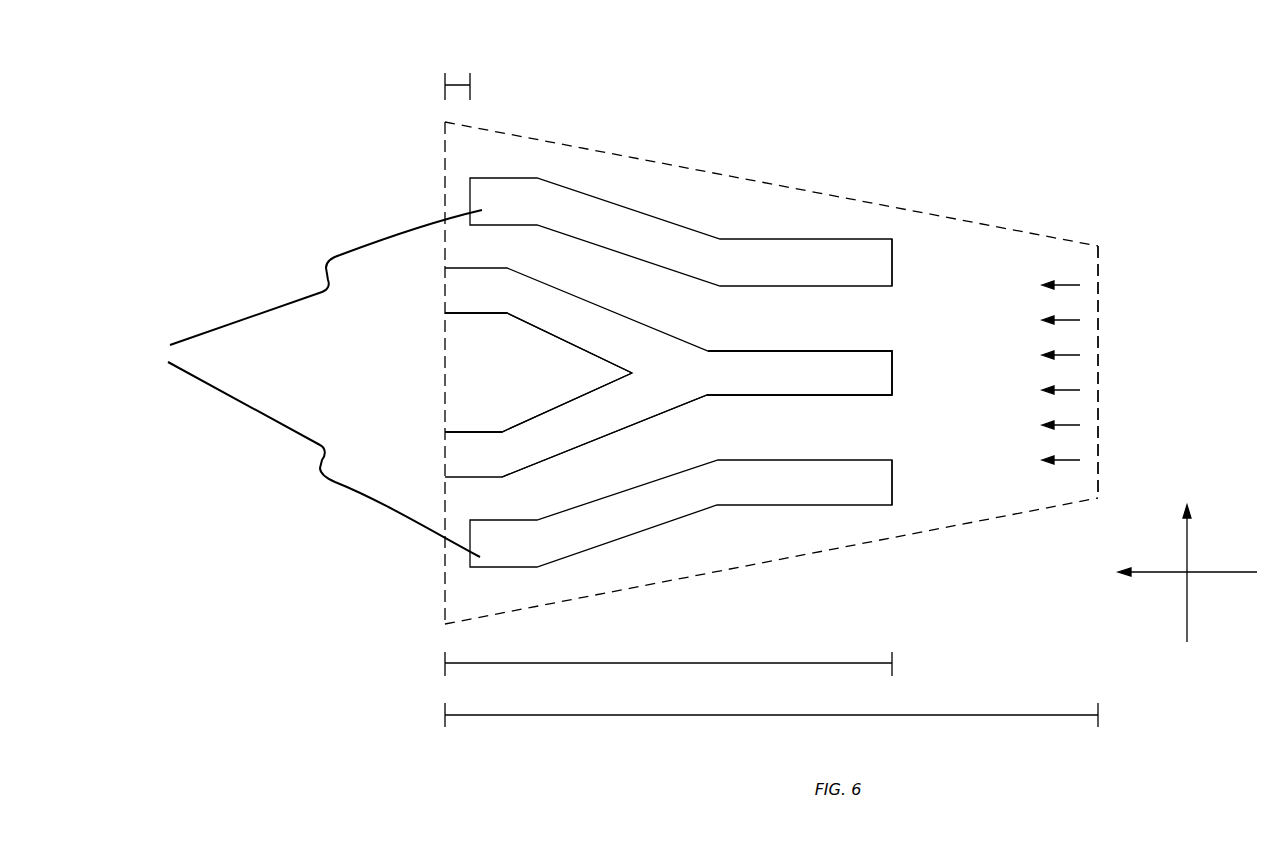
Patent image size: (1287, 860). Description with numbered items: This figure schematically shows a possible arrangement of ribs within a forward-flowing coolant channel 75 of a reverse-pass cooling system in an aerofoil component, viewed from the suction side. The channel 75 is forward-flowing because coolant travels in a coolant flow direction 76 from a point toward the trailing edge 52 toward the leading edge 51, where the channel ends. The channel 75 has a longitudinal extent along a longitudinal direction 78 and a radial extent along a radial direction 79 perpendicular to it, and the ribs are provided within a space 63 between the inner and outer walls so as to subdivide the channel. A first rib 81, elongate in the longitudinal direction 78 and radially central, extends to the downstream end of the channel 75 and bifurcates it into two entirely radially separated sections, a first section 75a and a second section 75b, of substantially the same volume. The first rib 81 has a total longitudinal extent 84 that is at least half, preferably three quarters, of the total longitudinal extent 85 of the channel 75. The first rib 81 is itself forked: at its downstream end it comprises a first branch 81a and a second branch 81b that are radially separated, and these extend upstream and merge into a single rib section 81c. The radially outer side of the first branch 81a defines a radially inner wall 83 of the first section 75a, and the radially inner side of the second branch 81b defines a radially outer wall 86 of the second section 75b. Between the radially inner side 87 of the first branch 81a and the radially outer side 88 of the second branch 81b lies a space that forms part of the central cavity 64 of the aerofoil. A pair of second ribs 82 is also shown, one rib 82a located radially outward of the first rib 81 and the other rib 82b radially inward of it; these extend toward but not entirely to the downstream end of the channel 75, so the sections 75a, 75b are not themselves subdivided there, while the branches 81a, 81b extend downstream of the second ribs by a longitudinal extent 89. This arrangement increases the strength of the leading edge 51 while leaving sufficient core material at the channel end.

The leading edge 51 is at (325, 186).
The trailing edge 52 is at (1140, 289).
The space 63 is at (984, 384).
The central cavity 64 is at (492, 382).
The coolant channel 75 is at (702, 162).
The first section 75a is at (704, 219).
The second section 75b is at (704, 437).
The coolant flow direction 76 is at (1068, 392).
The longitudinal direction 78 is at (1222, 572).
The radial direction 79 is at (1187, 540).
The first rib 81 is at (875, 397).
The first branch 81a is at (445, 283).
The second branch 81b is at (445, 455).
The single rib section 81c is at (892, 368).
The second ribs 82 is at (314, 383).
The first one of the pair of second ribs 82a is at (892, 263).
The other one of the pair of second ribs 82b is at (892, 480).
The radially inner wall 83 is at (780, 346).
The total longitudinal extent of the first rib 84 is at (807, 663).
The total longitudinal extent of the coolant channel 85 is at (928, 715).
The radially outer wall 86 is at (602, 444).
The radially inner side of the first branch 87 is at (460, 323).
The radially outer side of the second branch 88 is at (470, 424).
The longitudinal extent 89 is at (455, 85).